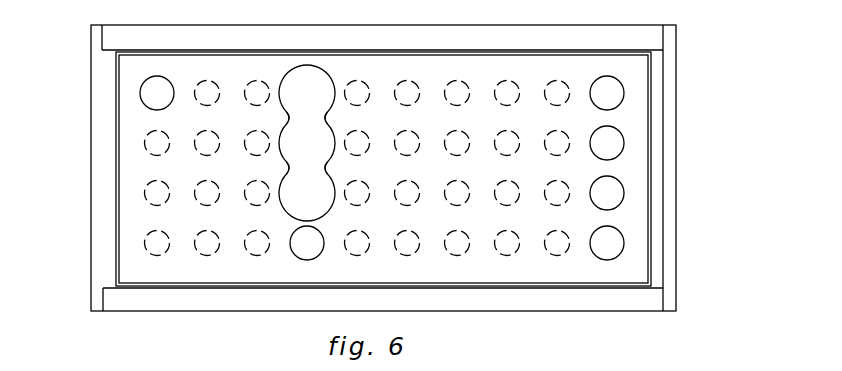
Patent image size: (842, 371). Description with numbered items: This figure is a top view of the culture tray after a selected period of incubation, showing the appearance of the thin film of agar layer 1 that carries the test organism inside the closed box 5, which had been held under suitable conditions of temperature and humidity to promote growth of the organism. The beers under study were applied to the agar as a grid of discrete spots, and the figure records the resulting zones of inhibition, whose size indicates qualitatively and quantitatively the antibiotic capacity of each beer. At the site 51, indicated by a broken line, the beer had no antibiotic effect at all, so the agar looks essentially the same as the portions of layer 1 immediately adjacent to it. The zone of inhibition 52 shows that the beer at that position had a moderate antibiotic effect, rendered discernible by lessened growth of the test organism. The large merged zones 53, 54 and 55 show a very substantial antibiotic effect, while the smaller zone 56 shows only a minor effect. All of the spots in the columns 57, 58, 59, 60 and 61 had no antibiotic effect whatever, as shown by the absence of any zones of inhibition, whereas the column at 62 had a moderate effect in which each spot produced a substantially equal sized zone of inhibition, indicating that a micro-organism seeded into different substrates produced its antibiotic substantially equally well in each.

The agar layer 1 is at (633, 113).
The box 5 is at (686, 162).
The site 51 is at (147, 240).
The zone of inhibition 52 is at (157, 80).
The zone of inhibition 53 is at (303, 75).
The zone of inhibition 54 is at (325, 131).
The zone of inhibition 55 is at (323, 181).
The zone of inhibition 56 is at (317, 237).
The column 57 is at (357, 84).
The column 58 is at (405, 85).
The column 59 is at (457, 85).
The column 60 is at (508, 85).
The column 61 is at (557, 85).
The zone of inhibition 62 is at (605, 82).